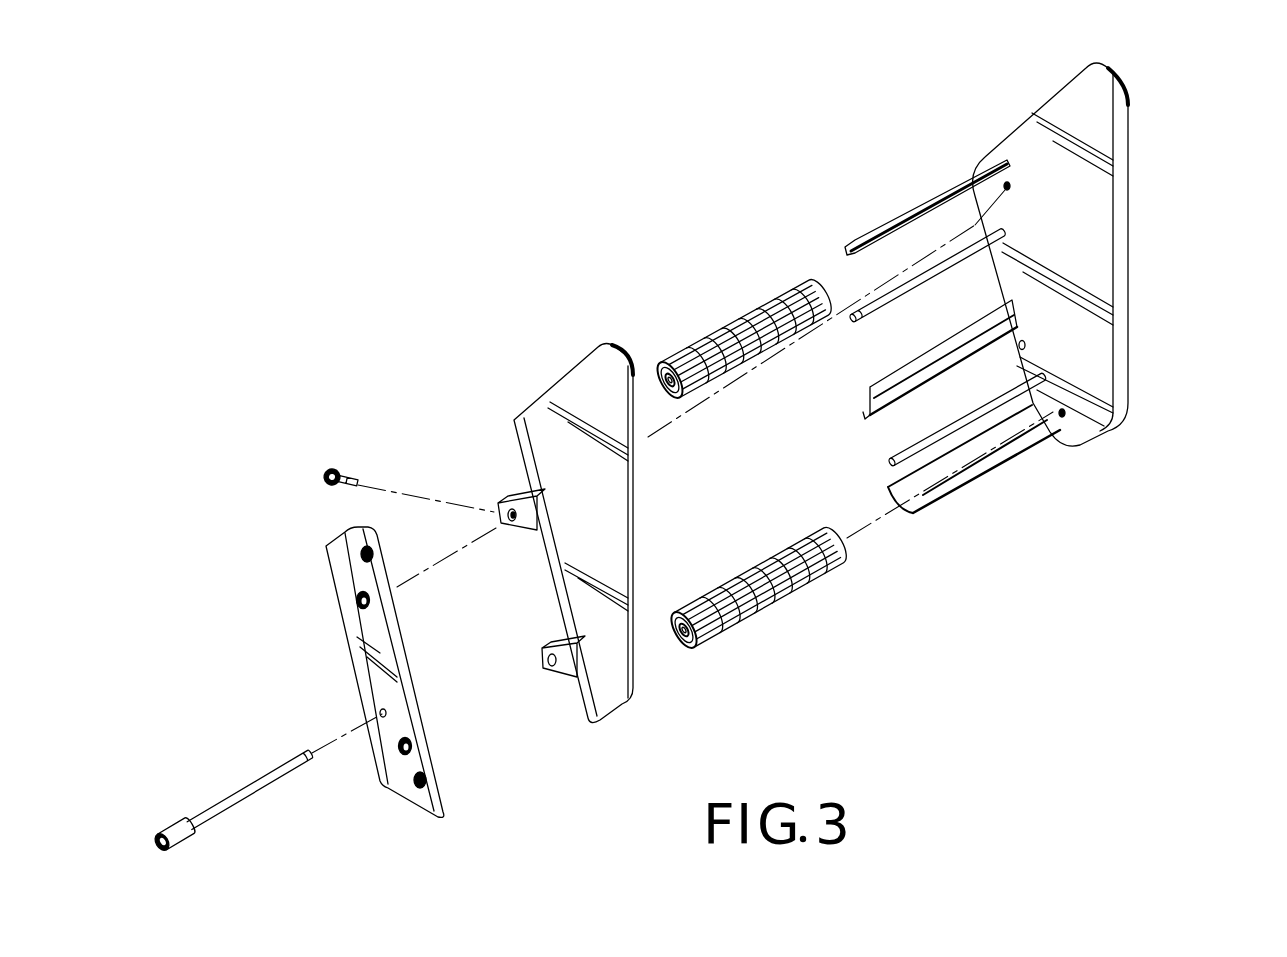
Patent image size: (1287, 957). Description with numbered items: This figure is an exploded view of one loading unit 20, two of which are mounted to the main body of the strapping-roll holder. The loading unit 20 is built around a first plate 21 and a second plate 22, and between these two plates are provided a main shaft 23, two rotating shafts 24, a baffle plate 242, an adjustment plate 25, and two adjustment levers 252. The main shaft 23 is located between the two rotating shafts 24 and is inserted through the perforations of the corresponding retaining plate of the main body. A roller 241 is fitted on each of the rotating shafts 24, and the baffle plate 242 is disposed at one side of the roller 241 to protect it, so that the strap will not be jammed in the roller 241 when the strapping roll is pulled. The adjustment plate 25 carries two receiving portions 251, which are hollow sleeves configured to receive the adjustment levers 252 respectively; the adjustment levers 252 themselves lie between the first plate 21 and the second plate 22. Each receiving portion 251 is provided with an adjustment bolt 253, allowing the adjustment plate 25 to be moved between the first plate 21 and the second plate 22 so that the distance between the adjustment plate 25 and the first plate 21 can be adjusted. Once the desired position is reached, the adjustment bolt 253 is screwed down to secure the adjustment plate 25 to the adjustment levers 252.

The loading unit 20 is at (463, 297).
The first plate 21 is at (1097, 237).
The second plate 22 is at (348, 573).
The main shaft 23 is at (247, 787).
The rotating shaft 24 is at (662, 365).
The roller 241 is at (748, 315).
The baffle plate 242 is at (908, 213).
The adjustment plate 25 is at (612, 502).
The receiving portion 251 is at (500, 500).
The adjustment lever 252 is at (867, 317).
The adjustment bolt 253 is at (345, 465).